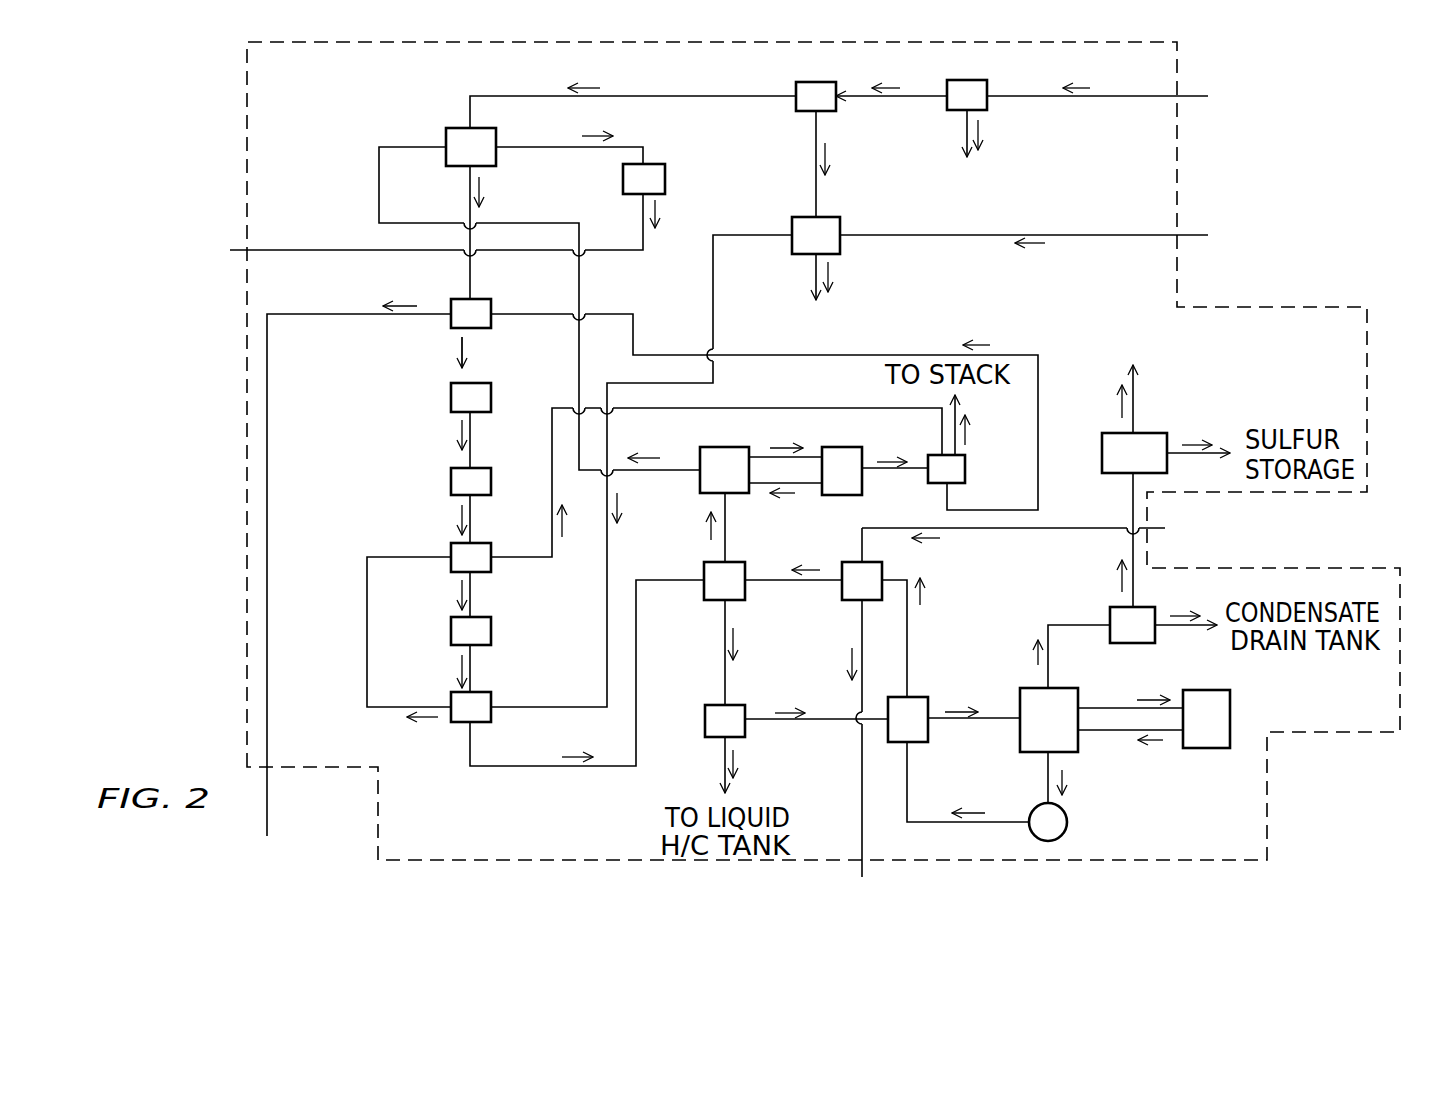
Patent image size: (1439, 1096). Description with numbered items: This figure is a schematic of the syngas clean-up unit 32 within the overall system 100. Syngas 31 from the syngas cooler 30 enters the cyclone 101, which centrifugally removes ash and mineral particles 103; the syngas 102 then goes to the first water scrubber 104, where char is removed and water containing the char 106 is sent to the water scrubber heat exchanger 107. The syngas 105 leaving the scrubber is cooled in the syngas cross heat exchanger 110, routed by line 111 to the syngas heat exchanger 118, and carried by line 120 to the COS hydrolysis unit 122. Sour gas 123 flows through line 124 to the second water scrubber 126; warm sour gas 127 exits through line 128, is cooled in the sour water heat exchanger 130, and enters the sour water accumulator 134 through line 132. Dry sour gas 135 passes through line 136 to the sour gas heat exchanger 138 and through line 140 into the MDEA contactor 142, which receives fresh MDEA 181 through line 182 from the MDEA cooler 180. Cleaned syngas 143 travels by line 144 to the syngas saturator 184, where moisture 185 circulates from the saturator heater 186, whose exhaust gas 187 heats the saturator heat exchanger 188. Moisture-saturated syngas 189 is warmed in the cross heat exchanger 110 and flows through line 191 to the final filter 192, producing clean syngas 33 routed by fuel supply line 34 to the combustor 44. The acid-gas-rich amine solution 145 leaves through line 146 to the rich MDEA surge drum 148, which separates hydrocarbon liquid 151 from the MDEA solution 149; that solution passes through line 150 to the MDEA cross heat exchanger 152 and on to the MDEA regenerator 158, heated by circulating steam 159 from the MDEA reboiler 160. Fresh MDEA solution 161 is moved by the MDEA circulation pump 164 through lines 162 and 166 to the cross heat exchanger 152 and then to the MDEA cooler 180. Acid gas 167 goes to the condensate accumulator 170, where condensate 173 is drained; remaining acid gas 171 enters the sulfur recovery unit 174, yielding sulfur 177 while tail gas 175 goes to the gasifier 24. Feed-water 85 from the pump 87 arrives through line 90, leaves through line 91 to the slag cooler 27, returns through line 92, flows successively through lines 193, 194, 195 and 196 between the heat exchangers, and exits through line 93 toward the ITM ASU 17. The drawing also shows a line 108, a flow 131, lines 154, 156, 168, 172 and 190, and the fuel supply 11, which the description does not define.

The system 100 is at (165, 113).
The syngas clean-up unit 32 is at (247, 395).
The syngas 31 is at (1082, 88).
The cyclone 101 is at (972, 80).
The syngas exiting the cyclone 102 is at (885, 88).
The ash and mineral particles 103 is at (982, 135).
The first water scrubber 104 is at (797, 83).
The syngas leaving the first water scrubber 105 is at (578, 88).
The water containing the char 106 is at (830, 160).
The water scrubber heat exchanger 107 is at (792, 222).
The stream to gasifier 108 is at (832, 278).
The syngas cross heat exchanger 110 is at (450, 128).
The line 111 is at (462, 190).
The syngas heat exchanger 118 is at (492, 300).
The line 120 is at (472, 350).
The COS hydrolysis unit 122 is at (452, 384).
The sour gas 123 is at (458, 438).
The line 124 is at (472, 432).
The second water scrubber 126 is at (452, 469).
The warm sour gas 127 is at (458, 518).
The line 128 is at (472, 512).
The sour water heat exchanger 130 is at (452, 544).
The syngas stream 131 is at (458, 598).
The line 132 is at (472, 590).
The sour water accumulator 134 is at (452, 618).
The dry sour gas 135 is at (458, 672).
The line 136 is at (472, 665).
The sour gas heat exchanger 138 is at (452, 693).
The line 140 is at (553, 768).
The MDEA contactor 142 is at (710, 601).
The cleaned syngas 143 is at (708, 540).
The line 144 is at (727, 530).
The acid-gas-rich amine solution 145 is at (737, 628).
The line 146 is at (723, 668).
The rich MDEA surge drum 148 is at (712, 738).
The MDEA solution 149 is at (784, 708).
The line 150 is at (772, 722).
The hydrocarbon liquid 151 is at (738, 770).
The MDEA cross heat exchanger 152 is at (920, 697).
The water stream 154 is at (908, 628).
The water stream 156 is at (1000, 722).
The MDEA regenerator 158 is at (1078, 690).
The circulating steam 159 is at (1152, 698).
The MDEA reboiler 160 is at (1231, 705).
The fresh MDEA solution 161 is at (924, 590).
The line 162 is at (1050, 760).
The MDEA circulation pump 164 is at (1067, 830).
The line 166 is at (908, 785).
The acid gas 167 is at (1035, 660).
The water stream 168 is at (1072, 660).
The condensate accumulator 170 is at (1110, 617).
The remaining acid gas 171 is at (1118, 575).
The stream 172 is at (1128, 552).
The condensate 173 is at (1182, 616).
The sulfur recovery unit 174 is at (1145, 433).
The tail gas 175 is at (1118, 400).
The sulfur 177 is at (1200, 445).
The MDEA cooler 180 is at (842, 592).
The fresh MDEA 181 is at (805, 562).
The line 182 is at (772, 578).
The syngas saturator 184 is at (710, 494).
The moisture 185 is at (775, 448).
The saturator heater 186 is at (860, 496).
The exhaust gas 187 is at (880, 462).
The saturator heat exchanger 188 is at (966, 465).
The moisture-saturated syngas 189 is at (592, 136).
The stream 190 is at (578, 378).
The line 191 is at (553, 147).
The final filter 192 is at (661, 165).
The line 193 is at (606, 628).
The line 194 is at (366, 633).
The line 195 is at (727, 408).
The line 196 is at (808, 357).
The clean syngas 33 is at (662, 203).
The fuel supply line 34 is at (655, 240).
The feed-water 85 is at (400, 306).
The line 90 is at (1040, 528).
The line 91 is at (863, 848).
The line 92 is at (940, 238).
The line 93 is at (268, 492).
The syngas cooler 30 is at (1313, 95).
The slag cooler 27 is at (1043, 557).
The fuel supply 11 is at (967, 197).
The gasifier 24 is at (996, 335).
The combustor 44 is at (145, 253).
The ITM ASU 17 is at (276, 872).
The pump 87 is at (1272, 530).